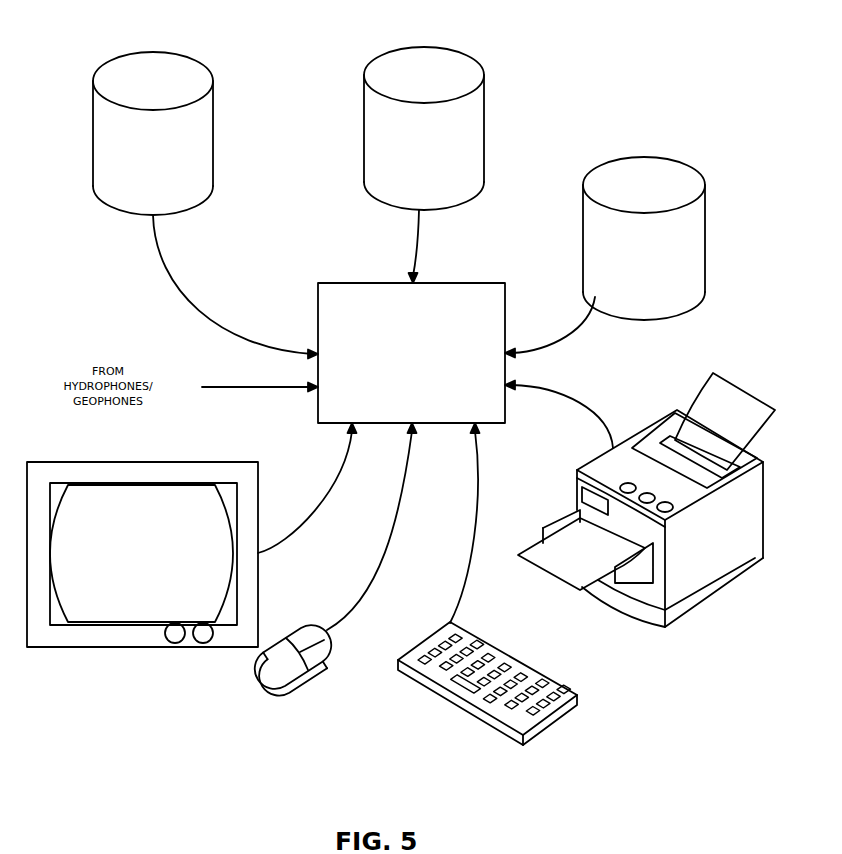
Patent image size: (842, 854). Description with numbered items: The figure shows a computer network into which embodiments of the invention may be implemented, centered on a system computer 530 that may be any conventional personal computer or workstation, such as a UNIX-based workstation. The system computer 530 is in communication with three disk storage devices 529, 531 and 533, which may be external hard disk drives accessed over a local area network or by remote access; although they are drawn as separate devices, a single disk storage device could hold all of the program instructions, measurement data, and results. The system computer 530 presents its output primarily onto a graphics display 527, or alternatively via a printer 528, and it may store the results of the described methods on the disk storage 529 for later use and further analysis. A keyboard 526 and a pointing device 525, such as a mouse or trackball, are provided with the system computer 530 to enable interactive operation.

The pointing device 525 is at (272, 693).
The keyboard 526 is at (543, 733).
The graphics display 527 is at (143, 647).
The printer 528 is at (680, 622).
The disk storage device 529 is at (642, 155).
The system computer 530 is at (443, 283).
The disk storage device 531 is at (465, 52).
The disk storage device 533 is at (187, 53).